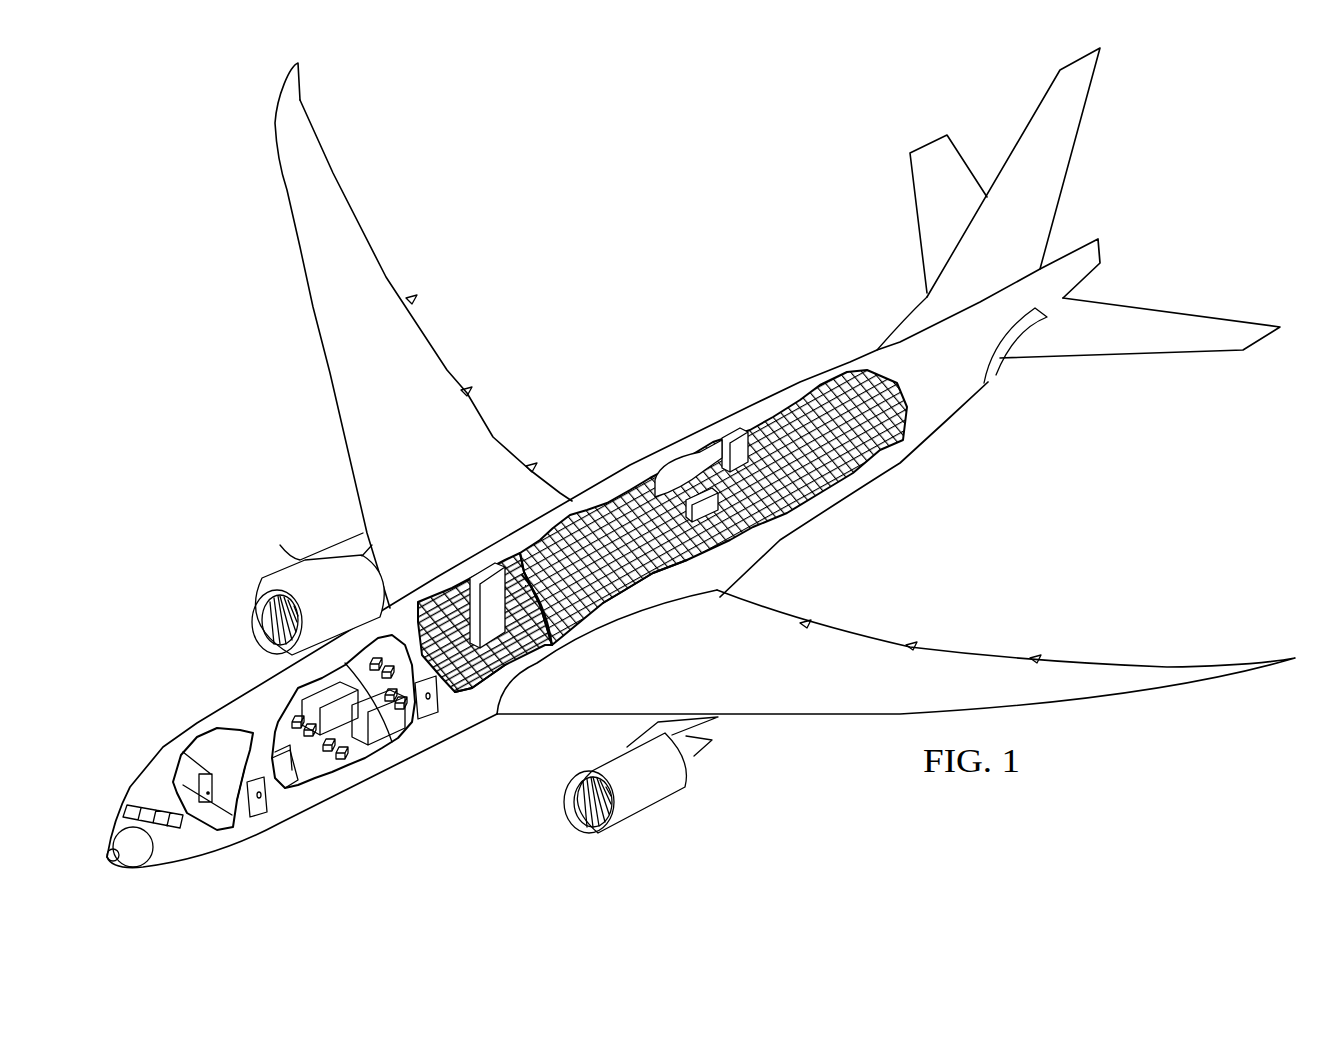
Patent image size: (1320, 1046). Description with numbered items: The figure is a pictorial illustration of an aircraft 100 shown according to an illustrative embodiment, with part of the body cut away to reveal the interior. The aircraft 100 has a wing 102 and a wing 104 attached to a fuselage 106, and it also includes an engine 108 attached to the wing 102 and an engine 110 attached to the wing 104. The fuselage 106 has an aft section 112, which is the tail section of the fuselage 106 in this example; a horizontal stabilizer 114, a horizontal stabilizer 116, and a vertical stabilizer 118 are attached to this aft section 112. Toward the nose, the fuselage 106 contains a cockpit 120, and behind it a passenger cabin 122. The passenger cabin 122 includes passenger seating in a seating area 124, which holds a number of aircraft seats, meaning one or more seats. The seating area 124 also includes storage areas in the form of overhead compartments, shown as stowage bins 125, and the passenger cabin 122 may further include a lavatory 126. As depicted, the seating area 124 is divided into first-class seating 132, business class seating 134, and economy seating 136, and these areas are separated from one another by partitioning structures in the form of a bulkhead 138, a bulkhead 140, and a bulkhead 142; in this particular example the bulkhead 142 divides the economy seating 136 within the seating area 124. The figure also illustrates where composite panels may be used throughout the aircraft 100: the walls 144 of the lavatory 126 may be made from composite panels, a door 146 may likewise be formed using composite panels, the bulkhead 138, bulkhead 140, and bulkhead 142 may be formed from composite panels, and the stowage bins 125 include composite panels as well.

The aircraft 100 is at (580, 310).
The wing 102 is at (817, 720).
The wing 104 is at (305, 290).
The fuselage 106 is at (595, 474).
The engine 108 is at (661, 804).
The engine 110 is at (300, 568).
The aft section 112 is at (1165, 176).
The horizontal stabilizer 114 is at (1170, 312).
The horizontal stabilizer 116 is at (918, 227).
The vertical stabilizer 118 is at (1072, 158).
The cockpit 120 is at (196, 765).
The passenger cabin 122 is at (772, 387).
The seating area 124 is at (474, 694).
The stowage bins 125 is at (707, 515).
The lavatory 126 is at (299, 792).
The first-class seating 132 is at (334, 774).
The business class seating 134 is at (438, 601).
The economy seating 136 is at (660, 589).
The bulkhead 138 is at (390, 742).
The bulkhead 140 is at (553, 620).
The bulkhead 142 is at (726, 437).
The walls 144 is at (279, 756).
The door 146 is at (207, 773).